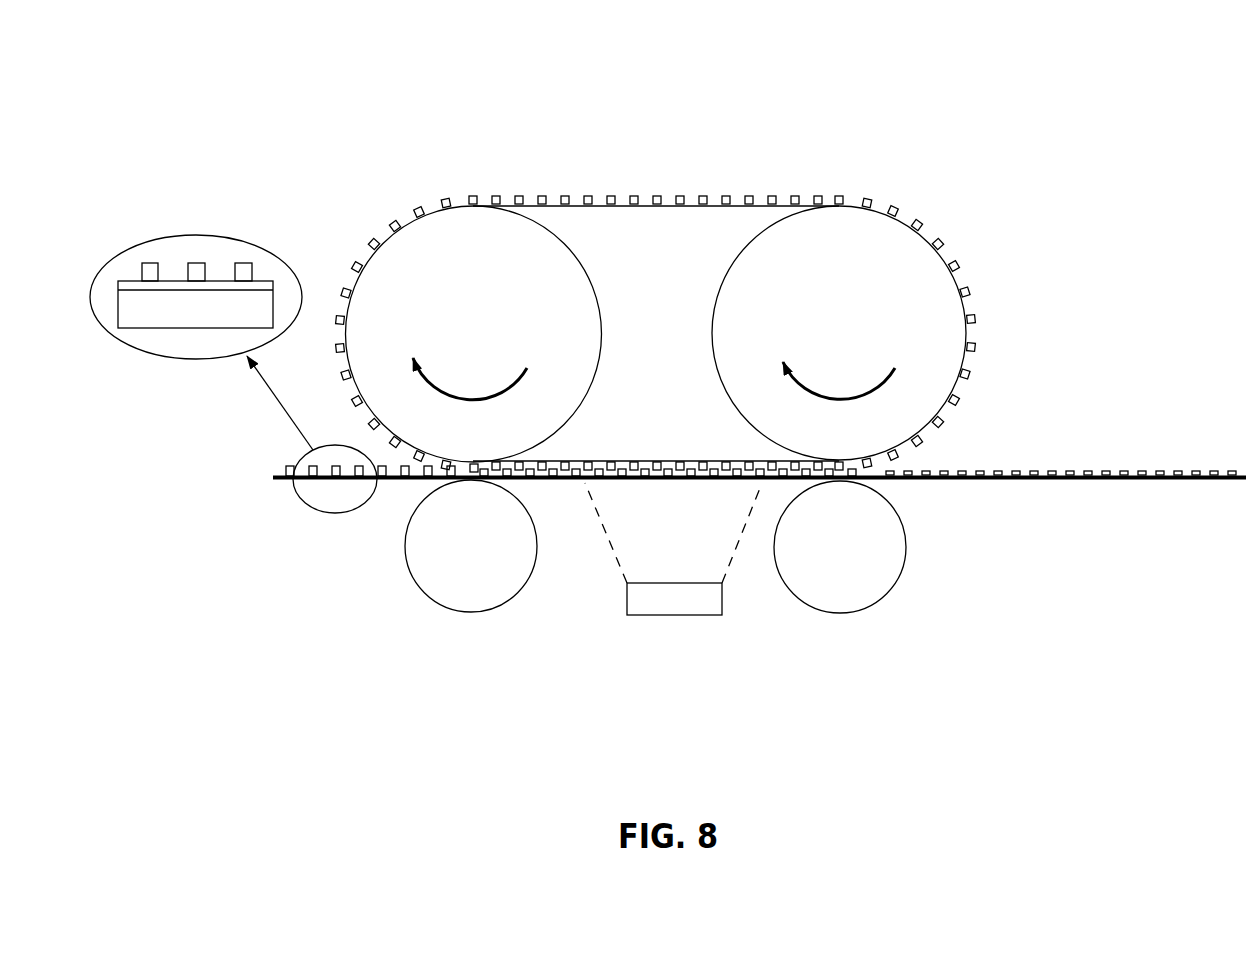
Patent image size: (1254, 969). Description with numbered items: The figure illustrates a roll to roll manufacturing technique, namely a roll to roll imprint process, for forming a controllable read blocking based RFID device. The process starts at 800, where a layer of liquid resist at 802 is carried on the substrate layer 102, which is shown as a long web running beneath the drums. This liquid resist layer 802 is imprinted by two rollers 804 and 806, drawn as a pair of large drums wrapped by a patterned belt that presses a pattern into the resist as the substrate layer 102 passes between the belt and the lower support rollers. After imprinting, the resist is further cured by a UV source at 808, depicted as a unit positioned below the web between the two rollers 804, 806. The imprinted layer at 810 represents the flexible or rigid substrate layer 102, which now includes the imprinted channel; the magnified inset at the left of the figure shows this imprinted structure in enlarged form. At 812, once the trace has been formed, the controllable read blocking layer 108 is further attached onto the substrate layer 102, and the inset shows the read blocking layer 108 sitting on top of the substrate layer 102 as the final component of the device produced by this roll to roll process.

The roll to roll manufacturing technique start 800 is at (1048, 172).
The layer of liquid resist 802 is at (1082, 468).
The roller 804 is at (753, 235).
The roller 806 is at (568, 240).
The UV source 808 is at (685, 620).
The imprinted layer 810 is at (223, 238).
The read blocking layer attachment stage 812 is at (297, 190).
The controllable read blocking layer 108 is at (178, 267).
The substrate layer 102 is at (1049, 480).